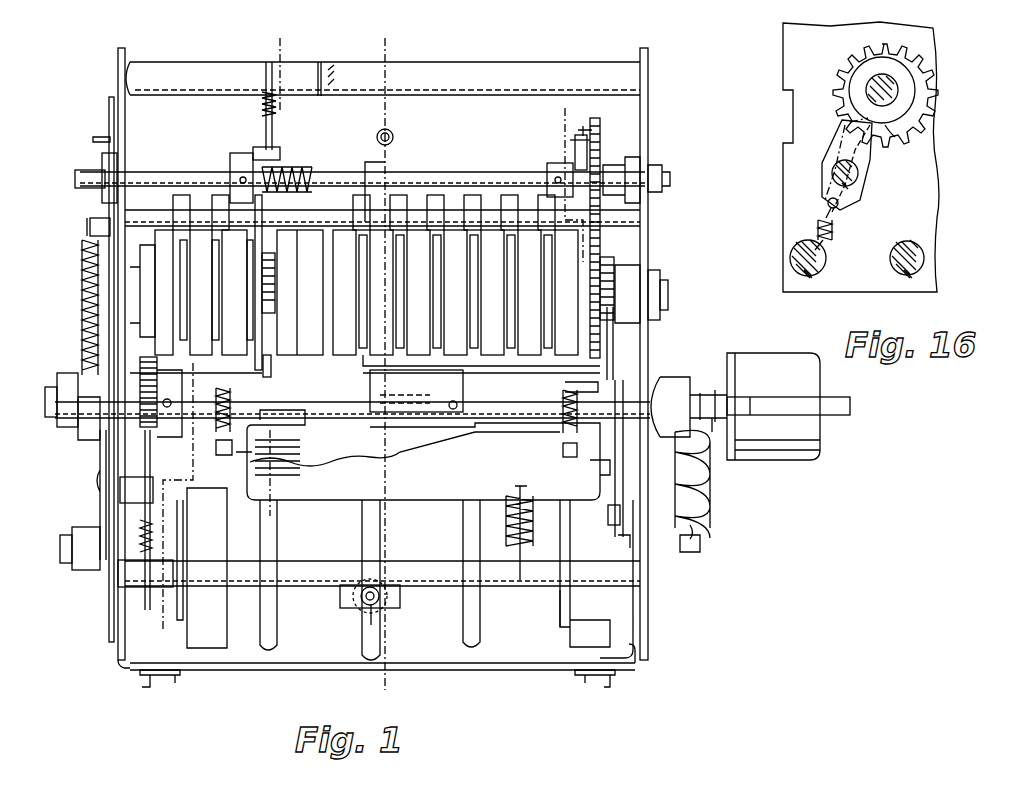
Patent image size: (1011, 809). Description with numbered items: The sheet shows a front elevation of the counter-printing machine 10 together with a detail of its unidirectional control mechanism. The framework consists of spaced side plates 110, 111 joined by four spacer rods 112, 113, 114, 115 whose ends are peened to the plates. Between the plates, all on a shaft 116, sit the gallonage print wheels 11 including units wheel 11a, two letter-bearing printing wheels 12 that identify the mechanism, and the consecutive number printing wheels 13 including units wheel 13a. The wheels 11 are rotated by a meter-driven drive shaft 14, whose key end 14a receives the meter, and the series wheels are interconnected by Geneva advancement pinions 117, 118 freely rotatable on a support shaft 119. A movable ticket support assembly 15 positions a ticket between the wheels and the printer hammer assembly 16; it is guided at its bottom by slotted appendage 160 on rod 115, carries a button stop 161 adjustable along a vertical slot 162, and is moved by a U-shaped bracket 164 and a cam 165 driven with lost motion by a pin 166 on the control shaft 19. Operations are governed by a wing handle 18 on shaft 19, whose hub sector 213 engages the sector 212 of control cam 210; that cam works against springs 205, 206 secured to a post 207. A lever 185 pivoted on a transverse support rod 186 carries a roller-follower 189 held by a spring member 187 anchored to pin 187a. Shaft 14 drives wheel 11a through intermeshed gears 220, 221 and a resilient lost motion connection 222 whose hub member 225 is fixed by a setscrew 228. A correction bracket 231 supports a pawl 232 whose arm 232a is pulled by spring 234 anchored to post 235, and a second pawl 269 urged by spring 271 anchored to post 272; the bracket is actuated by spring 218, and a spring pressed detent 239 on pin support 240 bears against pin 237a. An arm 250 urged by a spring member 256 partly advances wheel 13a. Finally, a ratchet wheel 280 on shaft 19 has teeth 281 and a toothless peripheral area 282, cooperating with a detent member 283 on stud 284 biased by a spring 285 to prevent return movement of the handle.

In FIG. 1, the counter-printing machine 10 is at (72, 120).
In FIG. 1, the side plate 110 is at (125, 115).
In FIG. 1, the side plate 111 is at (648, 116).
In FIG. 1, the spacer rod 112 is at (495, 68).
In FIG. 1, the spacer rod 113 is at (334, 63).
In FIG. 1, the spacer rod 114 is at (125, 588).
In FIG. 16, the spacer rod 114 is at (816, 277).
In FIG. 1, the spacer rod 115 is at (430, 564).
In FIG. 16, the spacer rod 115 is at (925, 253).
In FIG. 1, the shaft 116 is at (660, 292).
In FIG. 1, the advancement pinion 117 is at (436, 196).
In FIG. 1, the advancement pinion 118 is at (218, 196).
In FIG. 1, the support shaft 119 is at (648, 214).
In FIG. 1, the drive shaft 14 is at (482, 176).
In FIG. 1, the key end 14a is at (80, 180).
In FIG. 1, the ticket support assembly 15 is at (460, 122).
In FIG. 1, the consecutive number printing wheels 13 is at (217, 280).
In FIG. 1, the units wheel 13a is at (236, 353).
In FIG. 1, the letter-bearing printing wheels 12 is at (264, 42).
In FIG. 1, the gallonage print wheels 11 is at (520, 276).
In FIG. 1, the units wheel 11a is at (554, 350).
In FIG. 1, the printer hammer assembly 16 is at (183, 369).
In FIG. 1, the control shaft 19 is at (39, 406).
In FIG. 16, the control shaft 19 is at (864, 88).
In FIG. 1, the wing handle 18 is at (832, 415).
In FIG. 1, the slotted appendage 160 is at (560, 605).
In FIG. 1, the button stop 161 is at (362, 612).
In FIG. 1, the vertical slot 162 is at (374, 627).
In FIG. 1, the U-shaped bracket 164 is at (355, 468).
In FIG. 1, the cam 165 is at (433, 395).
In FIG. 1, the pin 166 is at (449, 408).
In FIG. 1, the lever 185 is at (100, 480).
In FIG. 1, the transverse support rod 186 is at (72, 548).
In FIG. 1, the spring member 187 is at (82, 310).
In FIG. 1, the pin 187a is at (90, 230).
In FIG. 1, the roller-follower 189 is at (85, 447).
In FIG. 1, the coiled spring member 205 is at (712, 500).
In FIG. 1, the coiled spring member 206 is at (700, 528).
In FIG. 1, the post 207 is at (703, 546).
In FIG. 1, the control cam 210 is at (676, 383).
In FIG. 1, the axial sector 212 is at (720, 361).
In FIG. 1, the axial hub sector 213 is at (715, 435).
In FIG. 1, the spring 218 is at (506, 508).
In FIG. 1, the gear 220 is at (600, 128).
In FIG. 1, the gear 221 is at (602, 252).
In FIG. 1, the resilient lost motion connection 222 is at (584, 124).
In FIG. 1, the hub member 225 is at (552, 164).
In FIG. 1, the setscrew 228 is at (574, 147).
In FIG. 1, the correction bracket 231 is at (430, 490).
In FIG. 1, the pawl 232 is at (608, 358).
In FIG. 1, the arm 232a is at (566, 384).
In FIG. 1, the spring 234 is at (562, 430).
In FIG. 1, the post 235 is at (562, 452).
In FIG. 1, the pin 237a is at (605, 478).
In FIG. 1, the spring pressed detent 239 is at (610, 514).
In FIG. 1, the pin support 240 is at (618, 540).
In FIG. 1, the arm 250 is at (274, 140).
In FIG. 1, the spring member 256 is at (262, 108).
In FIG. 1, the pawl 269 is at (271, 364).
In FIG. 1, the spring 271 is at (218, 432).
In FIG. 1, the post 272 is at (240, 455).
In FIG. 16, the ratchet wheel 280 is at (925, 98).
In FIG. 16, the teeth 281 is at (928, 79).
In FIG. 16, the peripheral area 282 is at (893, 126).
In FIG. 1, the detent member 283 is at (152, 458).
In FIG. 16, the detent member 283 is at (865, 180).
In FIG. 1, the stud 284 is at (122, 500).
In FIG. 16, the stud 284 is at (834, 168).
In FIG. 16, the spring 285 is at (832, 230).